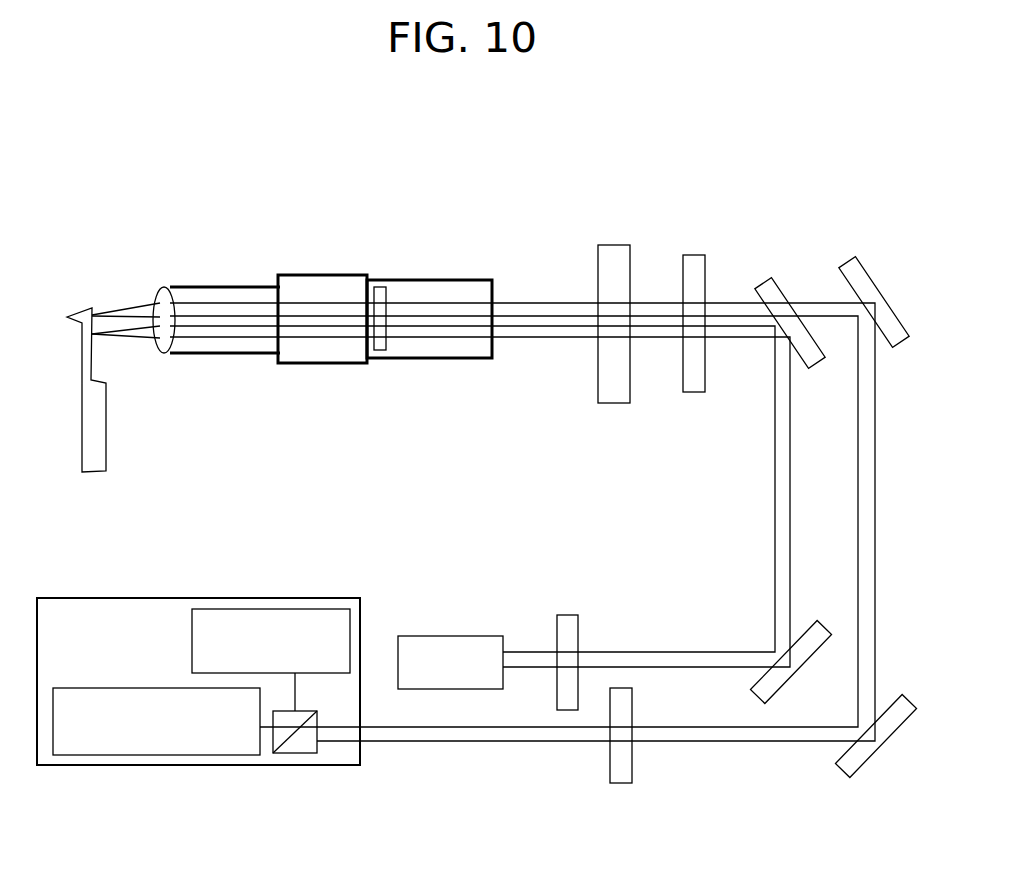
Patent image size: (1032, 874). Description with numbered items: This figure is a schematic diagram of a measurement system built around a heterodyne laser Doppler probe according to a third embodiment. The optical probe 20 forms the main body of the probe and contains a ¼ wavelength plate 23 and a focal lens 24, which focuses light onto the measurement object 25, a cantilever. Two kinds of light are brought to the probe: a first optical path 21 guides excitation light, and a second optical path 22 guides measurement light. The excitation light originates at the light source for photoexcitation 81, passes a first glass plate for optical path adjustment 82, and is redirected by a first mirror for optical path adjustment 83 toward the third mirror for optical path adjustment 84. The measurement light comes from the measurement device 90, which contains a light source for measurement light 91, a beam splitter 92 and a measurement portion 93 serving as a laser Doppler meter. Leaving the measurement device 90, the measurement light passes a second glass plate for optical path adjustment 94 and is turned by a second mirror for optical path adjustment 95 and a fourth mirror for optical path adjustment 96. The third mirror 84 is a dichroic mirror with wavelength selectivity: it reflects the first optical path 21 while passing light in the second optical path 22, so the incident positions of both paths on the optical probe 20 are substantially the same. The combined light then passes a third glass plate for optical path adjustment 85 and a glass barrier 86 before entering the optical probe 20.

The optical probe 20 is at (487, 270).
The first optical path 21 is at (523, 340).
The second optical path 22 is at (523, 302).
The ¼ wavelength plate 23 is at (379, 287).
The focal lens 24 is at (165, 287).
The measurement object 25 is at (82, 310).
The light source for photoexcitation 81 is at (462, 636).
The first glass plate for optical path adjustment 82 is at (578, 633).
The first mirror for optical path adjustment 83 is at (812, 657).
The third mirror for optical path adjustment 84 is at (773, 280).
The third glass plate for optical path adjustment 85 is at (700, 255).
The glass barrier 86 is at (620, 245).
The measurement device 90 is at (204, 672).
The light source for measurement light 91 is at (175, 756).
The beam splitter 92 is at (293, 755).
The measurement portion 93 is at (277, 608).
The second glass plate for optical path adjustment 94 is at (622, 783).
The second mirror for optical path adjustment 95 is at (842, 773).
The fourth mirror for optical path adjustment 96 is at (855, 259).